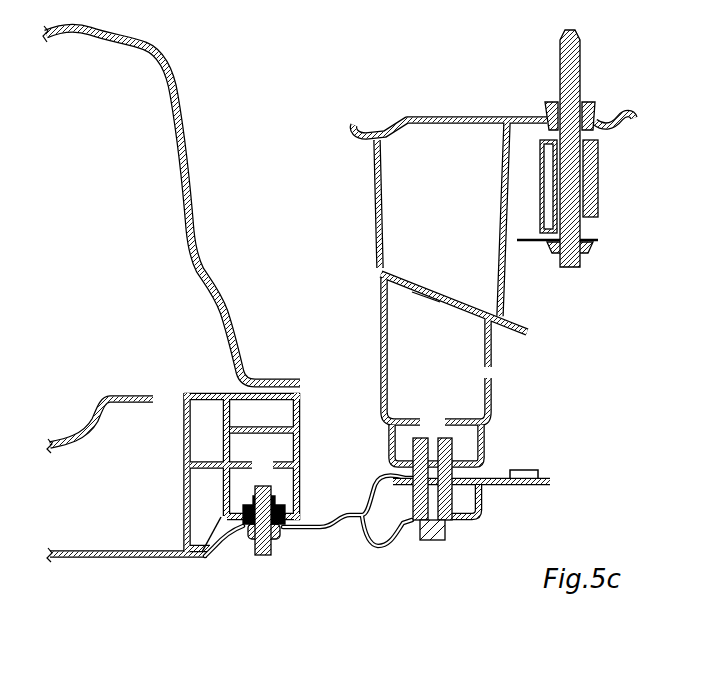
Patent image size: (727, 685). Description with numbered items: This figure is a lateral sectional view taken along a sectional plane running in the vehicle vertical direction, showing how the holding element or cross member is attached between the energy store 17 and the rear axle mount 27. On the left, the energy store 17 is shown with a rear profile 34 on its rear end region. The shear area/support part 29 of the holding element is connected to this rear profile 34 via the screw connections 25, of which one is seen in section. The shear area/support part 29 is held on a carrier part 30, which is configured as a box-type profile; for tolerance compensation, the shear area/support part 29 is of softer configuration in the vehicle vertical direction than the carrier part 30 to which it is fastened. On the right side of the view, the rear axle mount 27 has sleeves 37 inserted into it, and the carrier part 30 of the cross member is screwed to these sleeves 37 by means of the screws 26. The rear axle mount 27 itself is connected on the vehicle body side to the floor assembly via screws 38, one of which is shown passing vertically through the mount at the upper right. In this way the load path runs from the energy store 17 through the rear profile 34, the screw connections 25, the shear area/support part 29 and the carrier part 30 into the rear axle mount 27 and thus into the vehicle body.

The energy store 17 is at (108, 283).
The screw connections 25 is at (262, 556).
The screws 26 is at (420, 521).
The rear axle mount 27 is at (463, 97).
The shear area/support part 29 is at (292, 545).
The carrier part 30 is at (455, 542).
The rear profile 34 is at (183, 507).
The sleeves 37 is at (483, 450).
The screws 38 is at (572, 72).